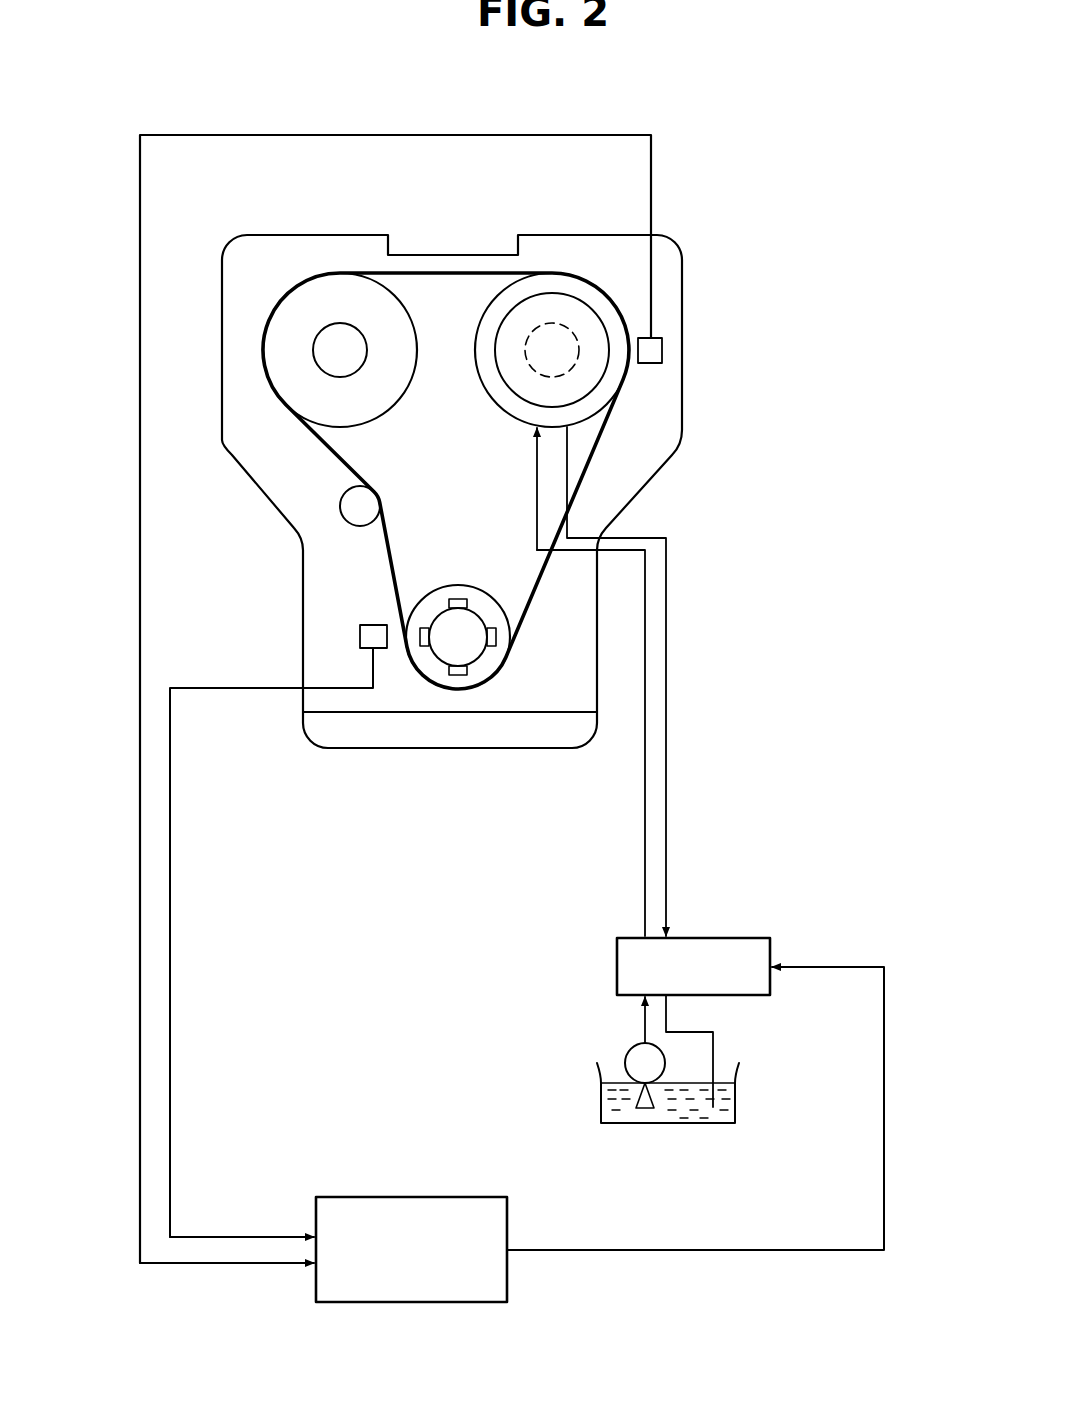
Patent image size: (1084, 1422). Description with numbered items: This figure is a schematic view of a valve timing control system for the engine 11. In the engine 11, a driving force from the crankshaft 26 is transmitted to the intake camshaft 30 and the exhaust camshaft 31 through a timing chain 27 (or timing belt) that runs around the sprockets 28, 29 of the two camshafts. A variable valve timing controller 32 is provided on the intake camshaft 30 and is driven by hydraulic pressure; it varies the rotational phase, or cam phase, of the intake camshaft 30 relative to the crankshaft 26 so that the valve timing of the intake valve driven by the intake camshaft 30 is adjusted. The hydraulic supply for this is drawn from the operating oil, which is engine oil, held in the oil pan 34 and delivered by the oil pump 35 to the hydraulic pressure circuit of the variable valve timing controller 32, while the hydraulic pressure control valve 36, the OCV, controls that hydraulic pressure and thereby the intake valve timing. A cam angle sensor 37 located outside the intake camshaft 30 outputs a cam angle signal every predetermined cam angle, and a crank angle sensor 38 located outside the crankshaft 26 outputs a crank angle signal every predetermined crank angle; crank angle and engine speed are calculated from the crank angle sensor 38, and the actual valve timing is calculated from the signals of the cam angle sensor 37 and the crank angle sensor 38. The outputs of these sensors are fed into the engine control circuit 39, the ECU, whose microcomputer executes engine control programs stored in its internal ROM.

The engine 11 is at (437, 247).
The crankshaft 26 is at (526, 800).
The timing chain 27 is at (690, 602).
The sprocket 28 is at (738, 422).
The sprocket 29 is at (307, 322).
The intake camshaft 30 is at (680, 497).
The exhaust camshaft 31 is at (337, 350).
The variable valve timing controller 32 is at (585, 302).
The oil pan 34 is at (793, 1095).
The oil pump 35 is at (627, 1050).
The hydraulic pressure control valve 36 is at (721, 938).
The cam angle sensor 37 is at (768, 351).
The crank angle sensor 38 is at (360, 635).
The engine control circuit 39 is at (363, 1197).